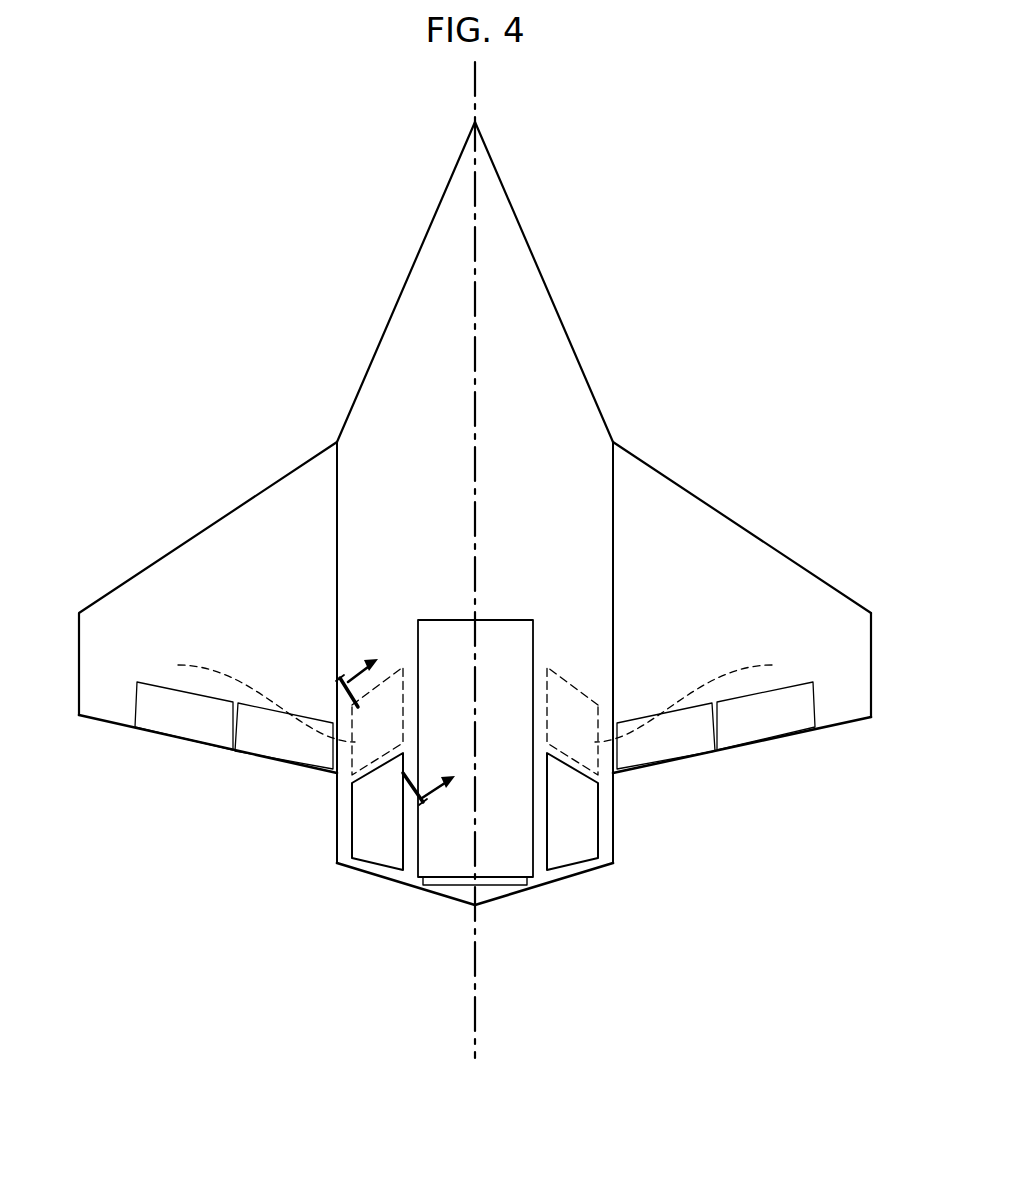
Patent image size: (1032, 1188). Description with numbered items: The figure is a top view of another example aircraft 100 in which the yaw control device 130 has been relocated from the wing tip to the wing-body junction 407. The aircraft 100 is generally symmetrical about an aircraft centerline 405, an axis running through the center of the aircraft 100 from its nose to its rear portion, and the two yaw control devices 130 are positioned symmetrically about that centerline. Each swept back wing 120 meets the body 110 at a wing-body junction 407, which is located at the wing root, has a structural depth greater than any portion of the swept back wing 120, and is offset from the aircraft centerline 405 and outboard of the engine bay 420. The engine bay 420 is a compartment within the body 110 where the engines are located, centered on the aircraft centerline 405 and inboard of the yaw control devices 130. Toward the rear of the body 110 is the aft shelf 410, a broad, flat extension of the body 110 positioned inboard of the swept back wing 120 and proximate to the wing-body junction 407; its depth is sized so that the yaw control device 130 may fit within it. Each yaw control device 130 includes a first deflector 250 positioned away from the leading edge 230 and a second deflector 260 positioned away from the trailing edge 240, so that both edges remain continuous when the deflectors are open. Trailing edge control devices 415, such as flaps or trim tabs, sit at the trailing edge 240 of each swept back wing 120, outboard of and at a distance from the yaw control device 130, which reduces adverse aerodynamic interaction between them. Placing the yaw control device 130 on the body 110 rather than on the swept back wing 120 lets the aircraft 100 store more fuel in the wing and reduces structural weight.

The aircraft 100 is at (703, 91).
The body 110 is at (540, 263).
The swept back wing 120 is at (748, 490).
The yaw control device 130 is at (670, 625).
The leading edge 230 is at (803, 566).
The trailing edge 240 is at (110, 727).
The first deflector 250 is at (375, 866).
The second deflector 260 is at (475, 672).
The aircraft centerline 405 is at (477, 496).
The wing-body junction 407 is at (615, 484).
The aft shelf 410 is at (348, 873).
The trailing edge control device 415 is at (203, 733).
The engine bay 420 is at (514, 620).